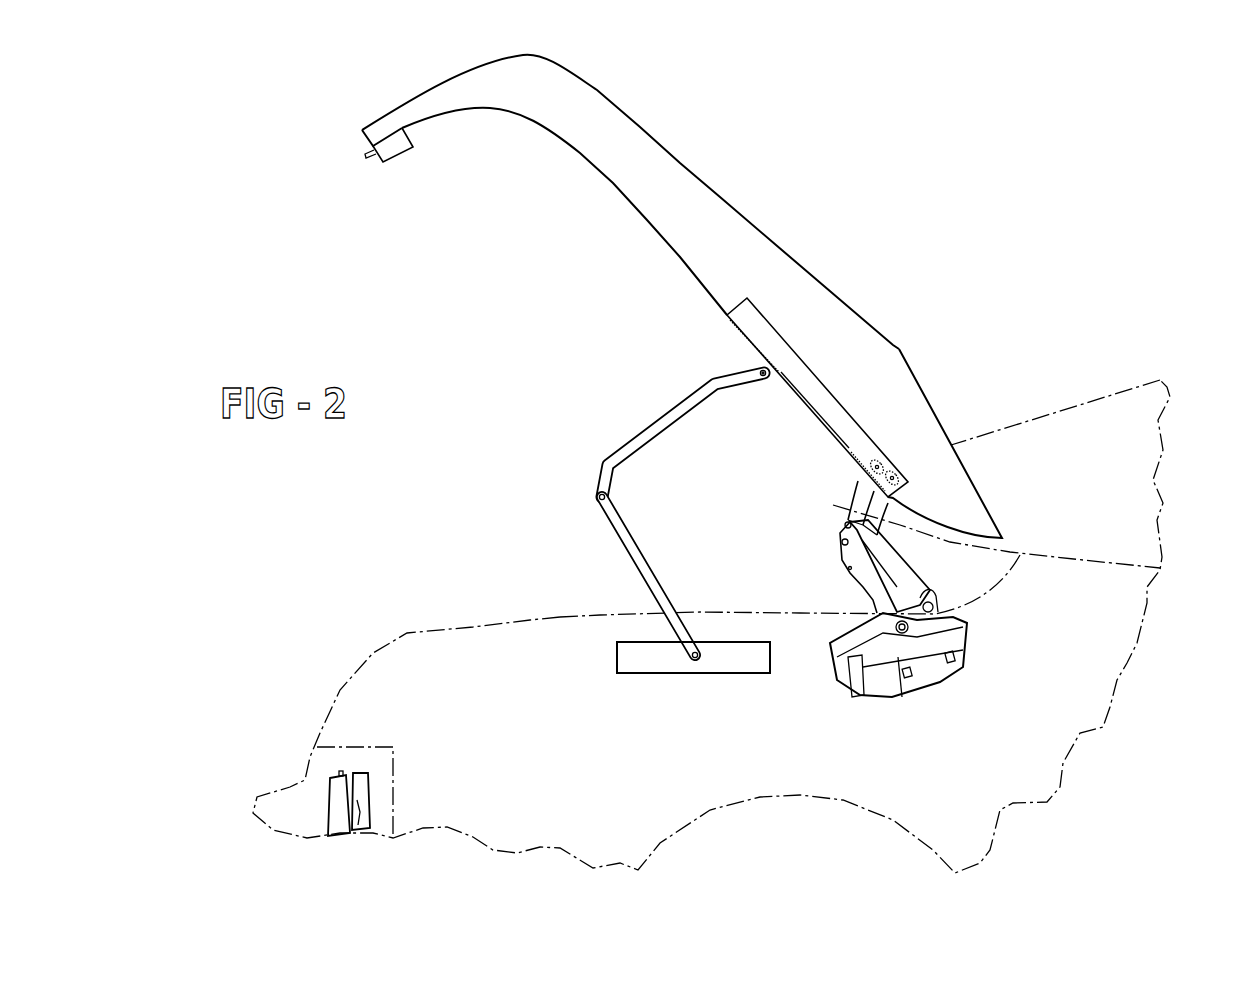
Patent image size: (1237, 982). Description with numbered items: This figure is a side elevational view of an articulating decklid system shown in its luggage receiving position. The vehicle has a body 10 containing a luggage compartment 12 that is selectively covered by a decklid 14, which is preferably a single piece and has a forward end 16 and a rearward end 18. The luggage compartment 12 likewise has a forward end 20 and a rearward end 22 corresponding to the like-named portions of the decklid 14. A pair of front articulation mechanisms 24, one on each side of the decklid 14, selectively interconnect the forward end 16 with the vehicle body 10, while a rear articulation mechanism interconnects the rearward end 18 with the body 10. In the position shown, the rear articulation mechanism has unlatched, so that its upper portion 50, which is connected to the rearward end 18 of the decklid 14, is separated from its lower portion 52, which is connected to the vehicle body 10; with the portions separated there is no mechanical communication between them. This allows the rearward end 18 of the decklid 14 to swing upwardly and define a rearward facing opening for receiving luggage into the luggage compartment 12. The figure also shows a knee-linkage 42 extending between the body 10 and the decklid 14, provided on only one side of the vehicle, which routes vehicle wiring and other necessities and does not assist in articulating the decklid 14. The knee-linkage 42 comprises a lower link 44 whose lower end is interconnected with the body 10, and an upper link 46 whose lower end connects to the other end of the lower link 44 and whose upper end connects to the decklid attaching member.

The body 10 is at (687, 761).
The luggage compartment 12 is at (530, 590).
The decklid 14 is at (745, 272).
The forward end 16 is at (900, 397).
The rearward end 18 is at (400, 107).
The forward end 20 is at (798, 579).
The rearward end 22 is at (366, 767).
The front articulation mechanisms 24 is at (820, 498).
The knee-linkage 42 is at (591, 463).
The lower link 44 is at (607, 527).
The upper link 46 is at (658, 422).
The upper portion 50 is at (393, 150).
The lower portion 52 is at (392, 803).